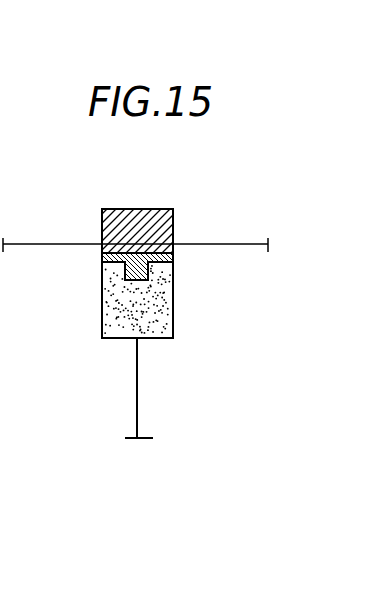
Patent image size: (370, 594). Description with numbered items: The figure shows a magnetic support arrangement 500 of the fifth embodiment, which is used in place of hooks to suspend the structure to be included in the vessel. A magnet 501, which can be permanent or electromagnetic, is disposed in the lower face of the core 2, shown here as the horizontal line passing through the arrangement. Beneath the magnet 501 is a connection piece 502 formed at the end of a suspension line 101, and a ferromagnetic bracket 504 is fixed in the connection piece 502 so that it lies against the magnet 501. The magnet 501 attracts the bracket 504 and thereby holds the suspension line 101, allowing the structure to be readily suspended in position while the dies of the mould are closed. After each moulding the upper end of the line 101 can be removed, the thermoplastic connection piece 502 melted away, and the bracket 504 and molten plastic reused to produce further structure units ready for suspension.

The core 2 is at (278, 220).
The magnetic support arrangement 500 is at (94, 208).
The magnet 501 is at (152, 220).
The connection piece 502 is at (105, 318).
The ferromagnetic bracket 504 is at (173, 257).
The suspension line 101 is at (137, 398).